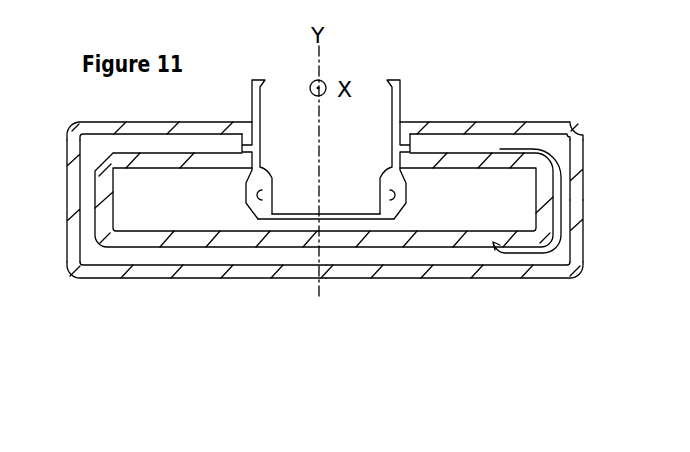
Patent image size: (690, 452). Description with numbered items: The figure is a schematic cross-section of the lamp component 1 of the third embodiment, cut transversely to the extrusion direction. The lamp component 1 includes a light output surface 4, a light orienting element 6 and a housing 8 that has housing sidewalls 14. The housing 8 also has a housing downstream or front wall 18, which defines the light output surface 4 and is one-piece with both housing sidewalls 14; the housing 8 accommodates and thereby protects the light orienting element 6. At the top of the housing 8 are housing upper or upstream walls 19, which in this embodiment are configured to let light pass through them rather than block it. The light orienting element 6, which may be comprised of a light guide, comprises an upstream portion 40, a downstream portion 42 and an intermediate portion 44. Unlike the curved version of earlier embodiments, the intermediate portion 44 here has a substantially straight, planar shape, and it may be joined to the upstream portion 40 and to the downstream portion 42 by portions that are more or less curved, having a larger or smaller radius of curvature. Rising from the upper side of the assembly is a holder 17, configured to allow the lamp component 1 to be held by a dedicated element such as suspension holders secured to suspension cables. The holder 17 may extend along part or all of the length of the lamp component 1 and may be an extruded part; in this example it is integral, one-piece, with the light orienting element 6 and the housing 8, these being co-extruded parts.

The lamp component 1 is at (492, 91).
The light output surface 4 is at (251, 290).
The light orienting element 6 is at (628, 109).
The housing 8 is at (609, 257).
The housing sidewalls 14 is at (580, 237).
The holder 17 is at (268, 170).
The housing downstream or front wall 18 is at (500, 270).
The housing upper or upstream walls 19 is at (143, 130).
The upstream portion 40 is at (547, 186).
The downstream portion 42 is at (585, 183).
The intermediate portion 44 is at (566, 164).